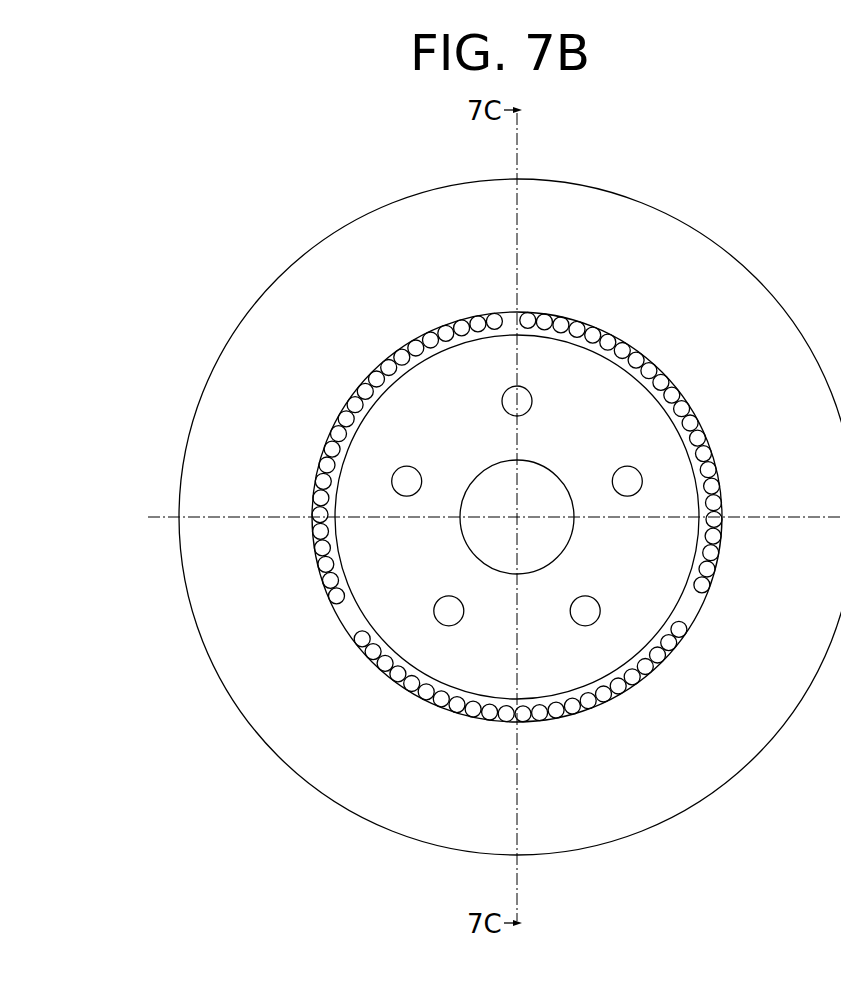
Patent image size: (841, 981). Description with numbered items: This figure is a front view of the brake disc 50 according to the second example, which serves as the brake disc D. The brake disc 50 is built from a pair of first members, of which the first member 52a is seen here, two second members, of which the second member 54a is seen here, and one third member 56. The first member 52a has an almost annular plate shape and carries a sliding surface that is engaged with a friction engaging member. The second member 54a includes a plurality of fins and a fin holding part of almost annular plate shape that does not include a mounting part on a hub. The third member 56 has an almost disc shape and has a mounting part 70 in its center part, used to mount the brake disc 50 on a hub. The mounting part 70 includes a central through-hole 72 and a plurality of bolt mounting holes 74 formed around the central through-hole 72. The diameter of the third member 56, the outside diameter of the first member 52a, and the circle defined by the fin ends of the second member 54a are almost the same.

The brake disc 50 is at (459, 496).
The first member 52a is at (663, 231).
The second member 54a is at (463, 318).
The third member 56 is at (440, 390).
The mounting part 70 is at (435, 574).
The central through-hole 72 is at (466, 541).
The bolt mounting holes 74 is at (413, 490).